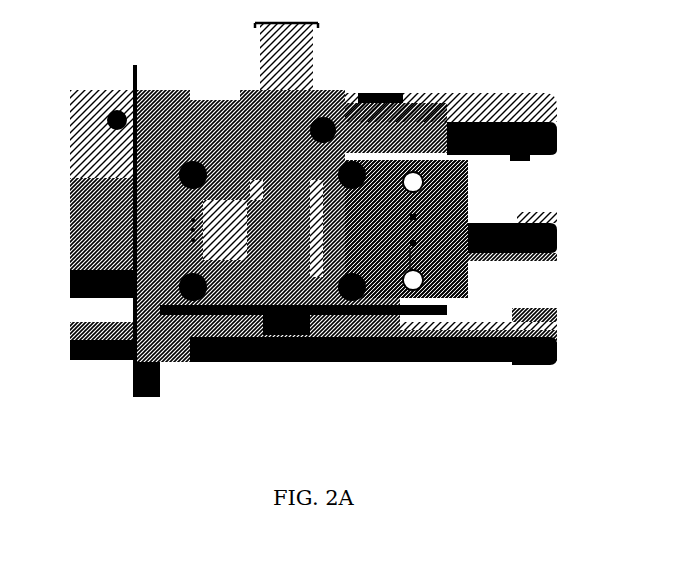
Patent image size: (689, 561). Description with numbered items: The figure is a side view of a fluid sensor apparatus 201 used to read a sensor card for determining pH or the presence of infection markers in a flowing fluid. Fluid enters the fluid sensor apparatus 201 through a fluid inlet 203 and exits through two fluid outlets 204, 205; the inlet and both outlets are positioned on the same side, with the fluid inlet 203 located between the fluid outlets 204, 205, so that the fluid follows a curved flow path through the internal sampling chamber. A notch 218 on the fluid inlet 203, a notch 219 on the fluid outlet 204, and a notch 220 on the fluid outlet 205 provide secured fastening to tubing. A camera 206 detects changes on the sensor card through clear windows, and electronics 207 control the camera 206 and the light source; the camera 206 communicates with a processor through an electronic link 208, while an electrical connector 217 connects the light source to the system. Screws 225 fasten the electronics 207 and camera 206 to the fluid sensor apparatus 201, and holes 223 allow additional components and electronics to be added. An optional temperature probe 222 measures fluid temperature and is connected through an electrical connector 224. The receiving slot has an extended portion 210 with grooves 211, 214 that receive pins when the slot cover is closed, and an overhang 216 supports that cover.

The fluid sensor apparatus 201 is at (190, 165).
The fluid inlet 203 is at (557, 231).
The fluid outlet 204 is at (560, 128).
The fluid outlet 205 is at (557, 332).
The camera 206 is at (247, 193).
The electronics 207 is at (242, 277).
The electronic link 208 is at (302, 63).
The extended portion 210 is at (87, 166).
The groove 211 is at (113, 100).
The groove 214 is at (70, 352).
The overhang 216 is at (153, 395).
The electrical connector 217 is at (218, 262).
The notch 218 is at (512, 260).
The notch 219 is at (517, 158).
The notch 220 is at (518, 300).
The temperature probe 222 is at (402, 285).
The holes 223 is at (485, 280).
The electrical connector 224 is at (465, 208).
The screws 225 is at (340, 280).